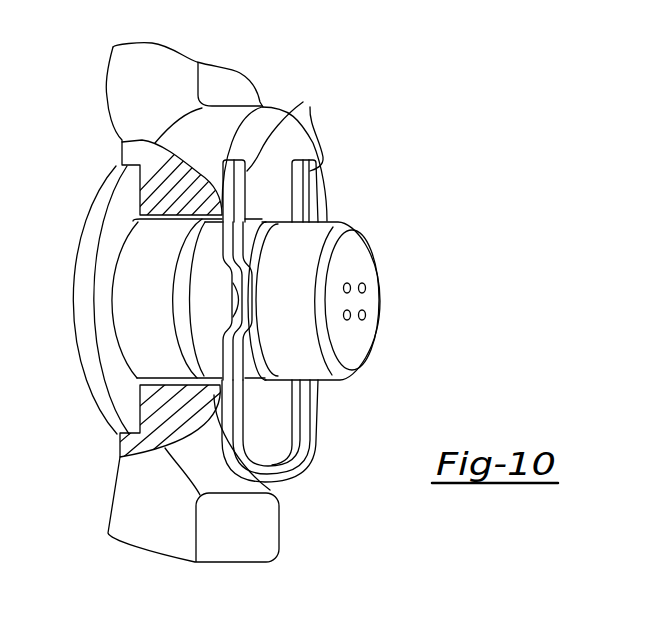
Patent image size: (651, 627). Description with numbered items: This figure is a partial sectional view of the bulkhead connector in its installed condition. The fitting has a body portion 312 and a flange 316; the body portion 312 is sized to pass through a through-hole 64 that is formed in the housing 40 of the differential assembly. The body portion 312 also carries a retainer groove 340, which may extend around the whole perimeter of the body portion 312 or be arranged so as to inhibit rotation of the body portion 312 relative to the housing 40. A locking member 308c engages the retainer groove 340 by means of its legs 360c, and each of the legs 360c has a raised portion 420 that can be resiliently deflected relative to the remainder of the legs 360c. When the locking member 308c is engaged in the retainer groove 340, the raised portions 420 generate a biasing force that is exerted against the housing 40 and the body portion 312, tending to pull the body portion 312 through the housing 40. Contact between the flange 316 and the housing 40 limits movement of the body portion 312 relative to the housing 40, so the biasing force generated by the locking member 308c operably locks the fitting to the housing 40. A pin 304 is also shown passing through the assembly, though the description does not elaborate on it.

The housing 40 is at (148, 456).
The through-hole 64 is at (133, 221).
The pin 304 is at (174, 352).
The locking member 308c is at (320, 456).
The body portion 312 is at (205, 288).
The flange 316 is at (103, 186).
The retainer groove 340 is at (250, 236).
The legs 360c is at (288, 125).
The raised portion 420 is at (247, 302).